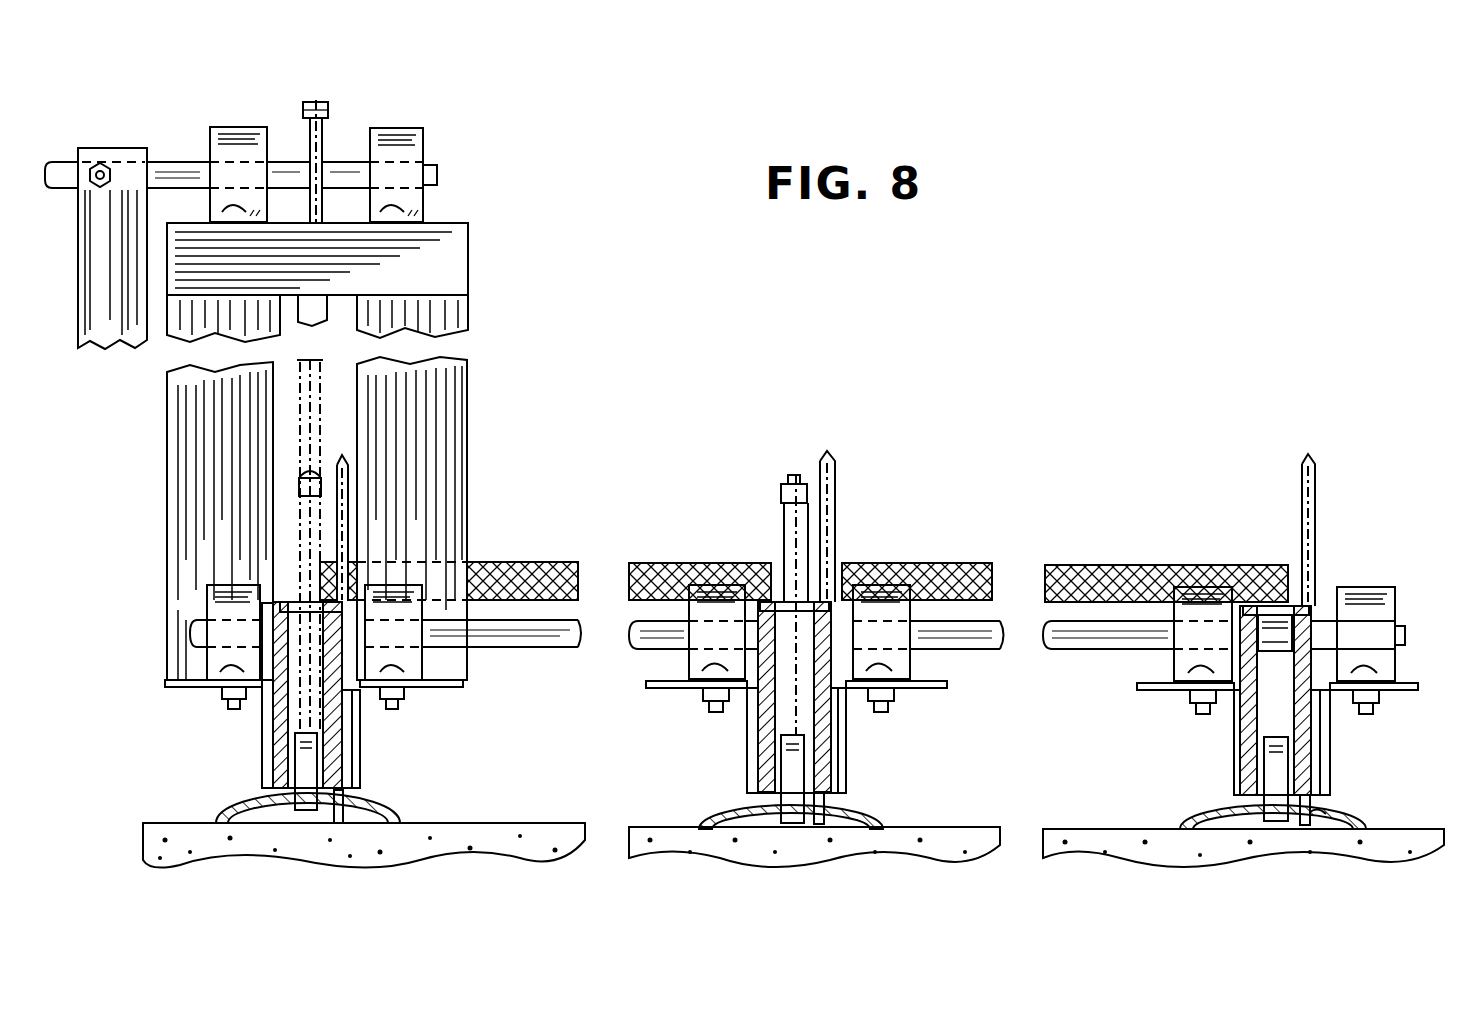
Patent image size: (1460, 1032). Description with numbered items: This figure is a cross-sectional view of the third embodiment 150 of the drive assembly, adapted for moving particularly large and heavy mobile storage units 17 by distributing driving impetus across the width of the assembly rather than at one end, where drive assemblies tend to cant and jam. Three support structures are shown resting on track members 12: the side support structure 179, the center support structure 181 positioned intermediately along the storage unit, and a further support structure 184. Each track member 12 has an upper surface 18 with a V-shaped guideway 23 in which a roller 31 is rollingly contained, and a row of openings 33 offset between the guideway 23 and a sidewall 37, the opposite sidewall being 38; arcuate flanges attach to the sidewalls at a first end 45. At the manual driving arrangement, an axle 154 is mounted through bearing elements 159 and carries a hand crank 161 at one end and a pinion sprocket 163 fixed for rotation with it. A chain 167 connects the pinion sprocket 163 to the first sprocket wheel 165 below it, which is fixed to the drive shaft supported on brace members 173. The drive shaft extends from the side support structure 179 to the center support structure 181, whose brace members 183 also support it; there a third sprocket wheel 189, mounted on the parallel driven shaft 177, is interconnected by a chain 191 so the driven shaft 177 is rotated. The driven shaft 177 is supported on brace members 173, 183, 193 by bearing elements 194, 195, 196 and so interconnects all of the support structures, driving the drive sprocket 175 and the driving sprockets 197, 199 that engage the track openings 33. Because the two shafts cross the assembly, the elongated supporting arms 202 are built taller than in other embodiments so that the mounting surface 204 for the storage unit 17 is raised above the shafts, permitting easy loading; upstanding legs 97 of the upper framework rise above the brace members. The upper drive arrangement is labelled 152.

The track member 12 is at (264, 830).
The mobile storage unit 17 is at (545, 562).
The upper surface 18 is at (1315, 805).
The guideway 23 is at (312, 833).
The roller 31 is at (272, 792).
The openings 33 is at (340, 823).
The sidewall 37 is at (880, 866).
The sidewall 38 is at (719, 835).
The first end 45 is at (377, 793).
The upstanding legs 97 is at (197, 478).
The third embodiment 150 is at (1143, 352).
The upper drive assembly 152 is at (158, 95).
The axle 154 is at (177, 160).
The bearing elements 159 is at (222, 130).
The hand crank 161 is at (95, 287).
The pinion sprocket 163 is at (327, 135).
The first sprocket wheel 165 is at (297, 520).
The chain 167 is at (323, 101).
The brace members 173 is at (215, 688).
The drive sprocket 175 is at (345, 520).
The driven shaft 177 is at (545, 638).
The side support structure 179 is at (532, 518).
The center support structure 181 is at (885, 535).
The brace members 183 is at (694, 692).
The support structure 184 is at (1393, 550).
The third sprocket wheel 189 is at (786, 524).
The chain 191 is at (794, 482).
The brace members 193 is at (1184, 692).
The bearing element 194 is at (210, 598).
The bearing element 195 is at (681, 663).
The bearing element 196 is at (1382, 602).
The driving sprocket 197 is at (833, 479).
The driving sprocket 199 is at (1311, 510).
The elongated supporting arms 202 is at (333, 730).
The mounting surface 204 is at (290, 598).